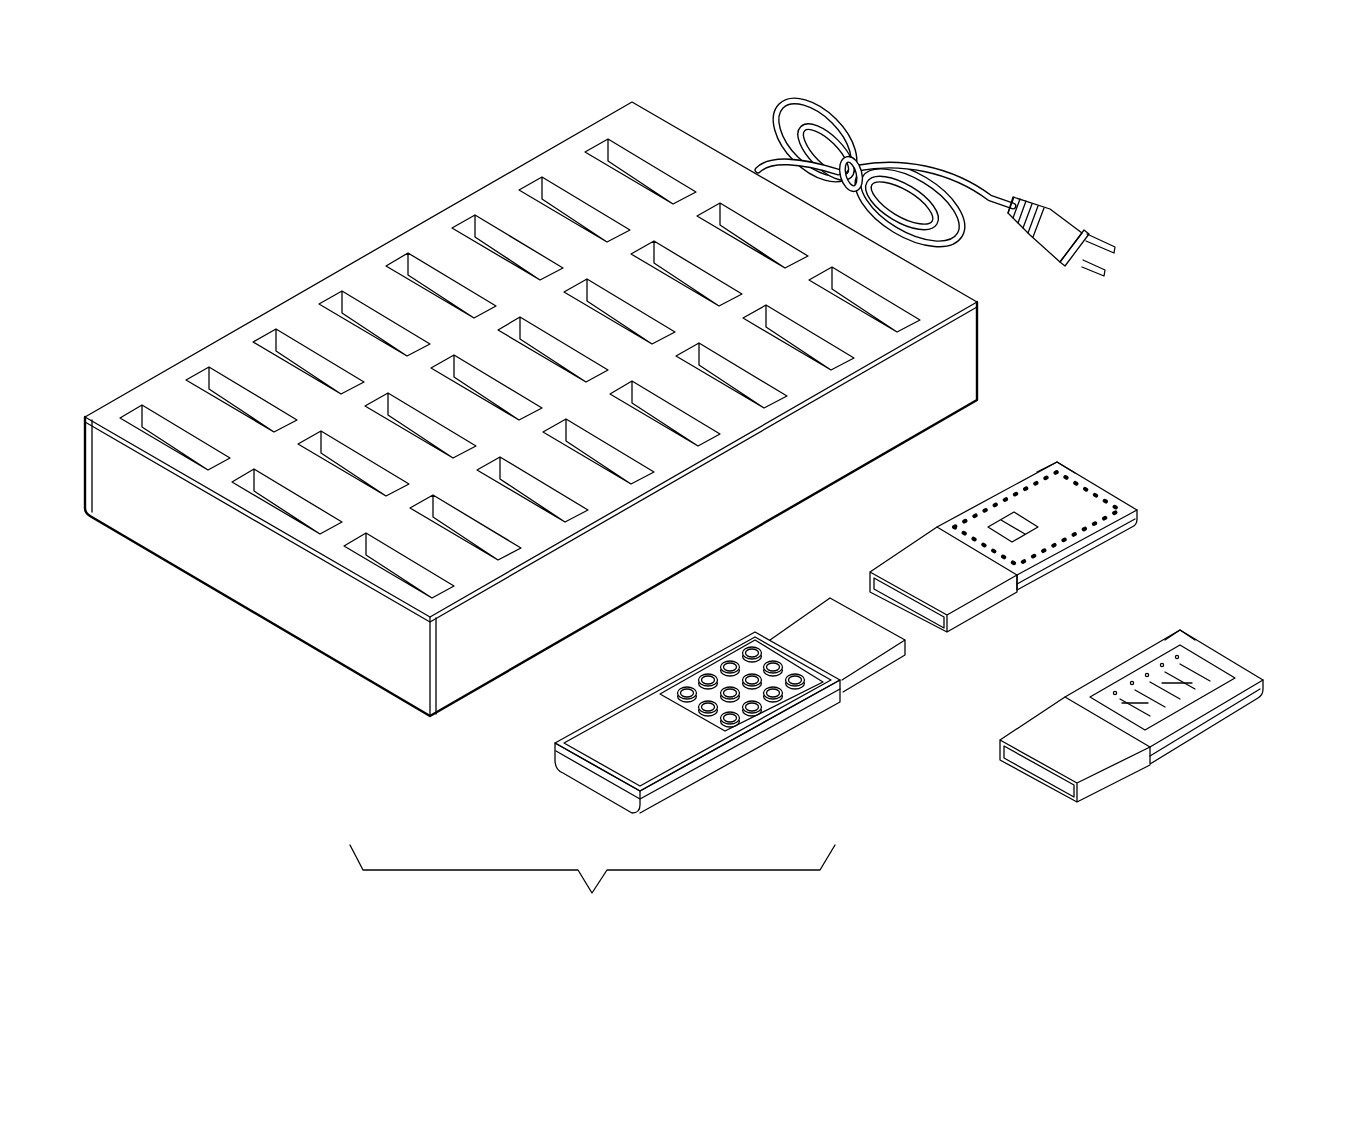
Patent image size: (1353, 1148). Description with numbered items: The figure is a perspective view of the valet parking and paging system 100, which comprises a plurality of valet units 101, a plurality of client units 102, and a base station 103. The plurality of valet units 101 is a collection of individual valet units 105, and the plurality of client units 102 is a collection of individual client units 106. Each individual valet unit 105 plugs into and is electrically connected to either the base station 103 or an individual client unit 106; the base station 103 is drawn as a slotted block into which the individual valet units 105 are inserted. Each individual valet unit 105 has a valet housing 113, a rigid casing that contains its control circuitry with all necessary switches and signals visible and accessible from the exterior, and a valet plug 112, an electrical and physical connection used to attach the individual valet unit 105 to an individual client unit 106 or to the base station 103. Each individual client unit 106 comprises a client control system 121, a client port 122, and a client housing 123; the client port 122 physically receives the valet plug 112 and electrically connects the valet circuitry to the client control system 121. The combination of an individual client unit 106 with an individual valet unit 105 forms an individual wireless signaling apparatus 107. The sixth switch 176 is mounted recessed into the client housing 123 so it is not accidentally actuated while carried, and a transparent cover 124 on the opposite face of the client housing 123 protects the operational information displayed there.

The valet parking and paging system 100 is at (225, 187).
The base station 103 is at (970, 356).
The individual wireless signaling apparatus 107 is at (900, 572).
The plurality of valet units 101 is at (790, 727).
The individual valet unit 105 is at (720, 773).
The valet housing 113 is at (658, 803).
The valet plug 112 is at (873, 673).
The individual client unit 106 is at (1113, 547).
The plurality of client units 102 is at (1020, 590).
The client housing 123 is at (1093, 484).
The sixth switch 176 is at (1007, 525).
The client control system 121 is at (1045, 468).
The client port 122 is at (980, 617).
The transparent cover 124 is at (1210, 688).